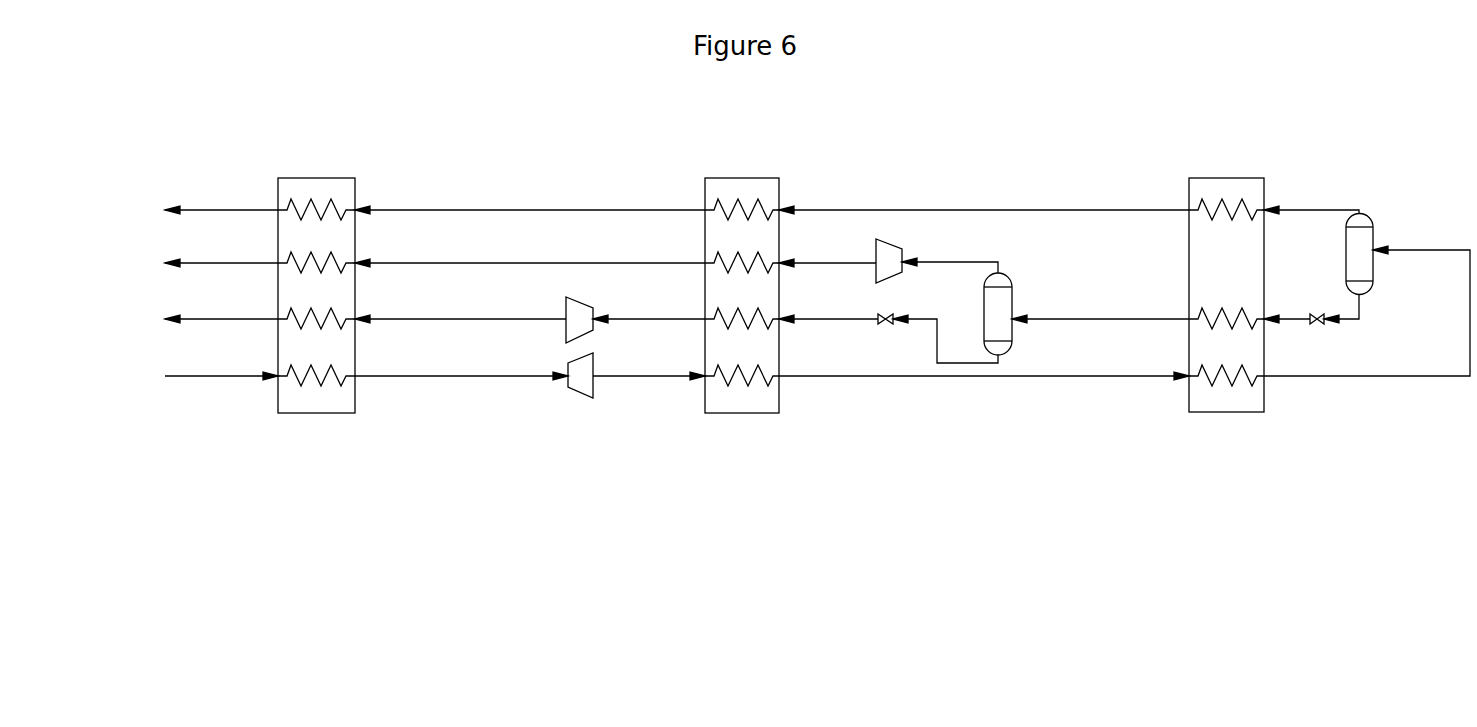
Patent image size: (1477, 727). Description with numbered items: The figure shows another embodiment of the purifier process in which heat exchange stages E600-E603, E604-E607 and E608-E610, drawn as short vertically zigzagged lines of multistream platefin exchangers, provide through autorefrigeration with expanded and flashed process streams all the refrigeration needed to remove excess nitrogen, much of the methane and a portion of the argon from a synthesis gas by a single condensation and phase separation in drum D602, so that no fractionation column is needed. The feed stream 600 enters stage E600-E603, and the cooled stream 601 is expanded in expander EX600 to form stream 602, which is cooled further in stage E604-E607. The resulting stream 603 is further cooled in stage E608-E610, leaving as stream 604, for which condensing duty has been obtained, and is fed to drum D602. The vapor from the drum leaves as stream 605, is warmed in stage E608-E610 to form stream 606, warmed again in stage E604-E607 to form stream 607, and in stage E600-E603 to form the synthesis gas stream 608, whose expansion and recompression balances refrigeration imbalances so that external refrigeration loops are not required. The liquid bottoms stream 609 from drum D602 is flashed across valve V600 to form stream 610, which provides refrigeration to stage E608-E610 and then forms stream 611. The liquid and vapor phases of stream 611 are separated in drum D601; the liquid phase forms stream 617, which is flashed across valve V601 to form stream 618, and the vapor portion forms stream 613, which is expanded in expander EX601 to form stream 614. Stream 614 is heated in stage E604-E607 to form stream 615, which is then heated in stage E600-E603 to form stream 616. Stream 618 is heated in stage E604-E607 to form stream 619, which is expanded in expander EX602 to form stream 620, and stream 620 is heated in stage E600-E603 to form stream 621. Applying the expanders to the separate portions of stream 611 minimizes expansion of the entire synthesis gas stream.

The heat exchange stage E600-E603 is at (316, 284).
The heat exchange stage E604-E607 is at (738, 284).
The heat exchange stage E608-E610 is at (1222, 284).
The expander EX600 is at (588, 398).
The expander EX601 is at (893, 278).
The expander EX602 is at (579, 297).
The drum D601 is at (1012, 300).
The drum D602 is at (1373, 240).
The valve V600 is at (1319, 325).
The valve V601 is at (887, 325).
The feed gas stream 600 is at (202, 378).
The stream 601 is at (461, 367).
The expanded stream 602 is at (649, 367).
The stream 603 is at (984, 366).
The stream 604 is at (1367, 311).
The vapor stream from drum D602 605 is at (1311, 200).
The warmed vapor stream 606 is at (984, 200).
The vapor stream to E600-E603 607 is at (530, 200).
The synthesis gas stream 608 is at (202, 212).
The liquid bottoms stream 609 is at (1362, 306).
The stream 610 is at (1290, 316).
The stream 611 is at (1100, 309).
The stream 613 is at (950, 256).
The stream 614 is at (827, 253).
The stream 615 is at (530, 253).
The stream 616 is at (202, 265).
The stream 617 is at (945, 339).
The stream 618 is at (828, 309).
The stream 619 is at (649, 309).
The stream 620 is at (460, 310).
The stream 621 is at (202, 321).